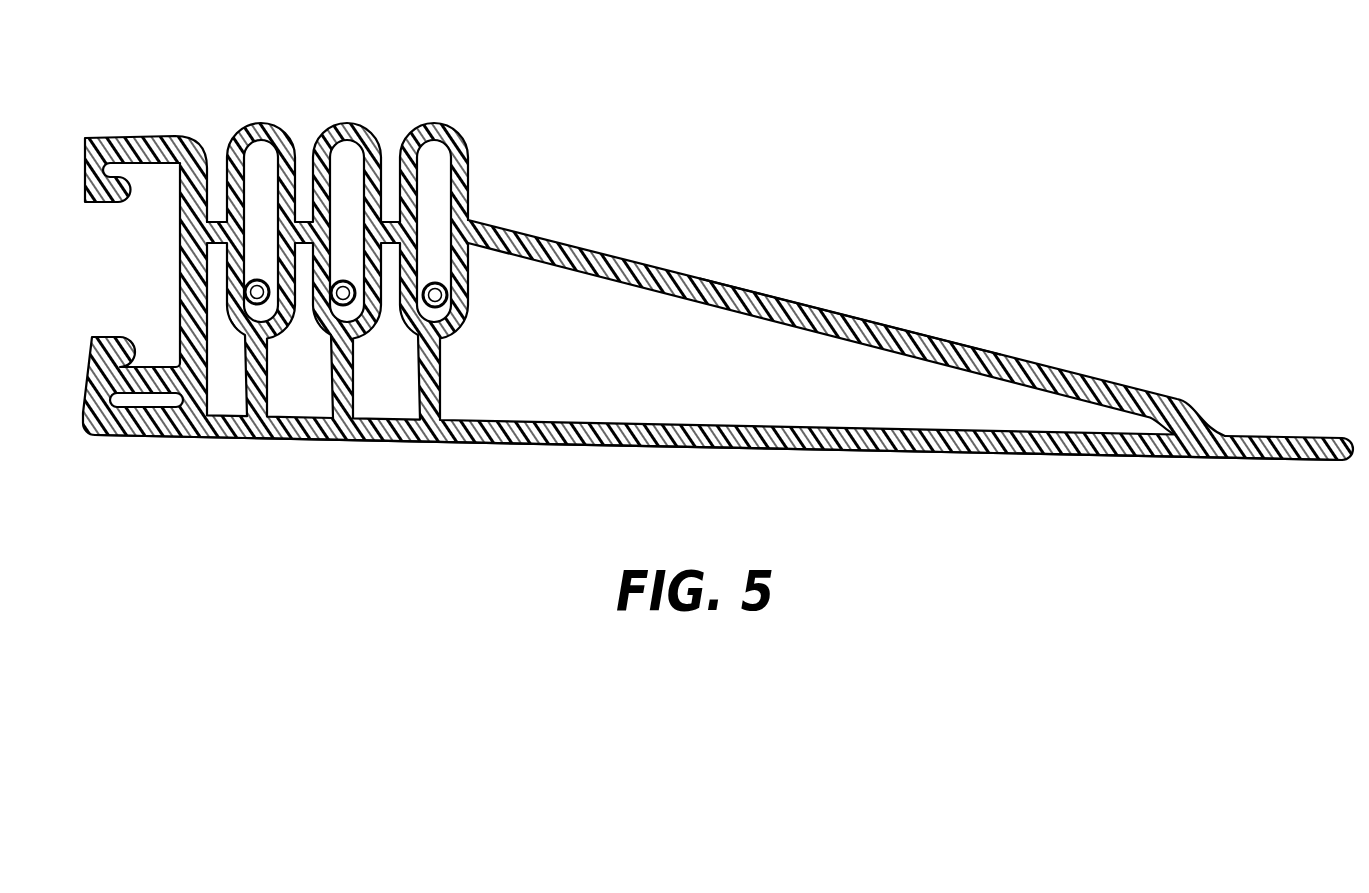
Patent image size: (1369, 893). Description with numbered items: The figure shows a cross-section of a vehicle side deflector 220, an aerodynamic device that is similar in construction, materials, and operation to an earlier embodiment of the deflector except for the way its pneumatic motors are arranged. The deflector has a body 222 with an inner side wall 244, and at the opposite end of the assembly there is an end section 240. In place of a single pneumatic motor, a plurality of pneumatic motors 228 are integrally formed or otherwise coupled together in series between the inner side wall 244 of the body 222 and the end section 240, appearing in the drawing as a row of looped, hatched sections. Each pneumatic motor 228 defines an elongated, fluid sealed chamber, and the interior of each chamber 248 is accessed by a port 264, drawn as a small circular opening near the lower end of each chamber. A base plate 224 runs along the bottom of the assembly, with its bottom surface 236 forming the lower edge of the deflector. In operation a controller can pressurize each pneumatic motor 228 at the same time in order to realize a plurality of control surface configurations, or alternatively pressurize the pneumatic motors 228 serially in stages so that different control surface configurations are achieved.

The vehicle side deflector 220 is at (754, 242).
The body 222 is at (553, 225).
The base plate 224 is at (550, 440).
The pneumatic motor 228 is at (260, 106).
The bottom surface of base plate 236 is at (833, 444).
The end section 240 is at (180, 236).
The inner side wall 244 is at (803, 300).
The cavity 248 is at (262, 157).
The port 264 is at (246, 292).